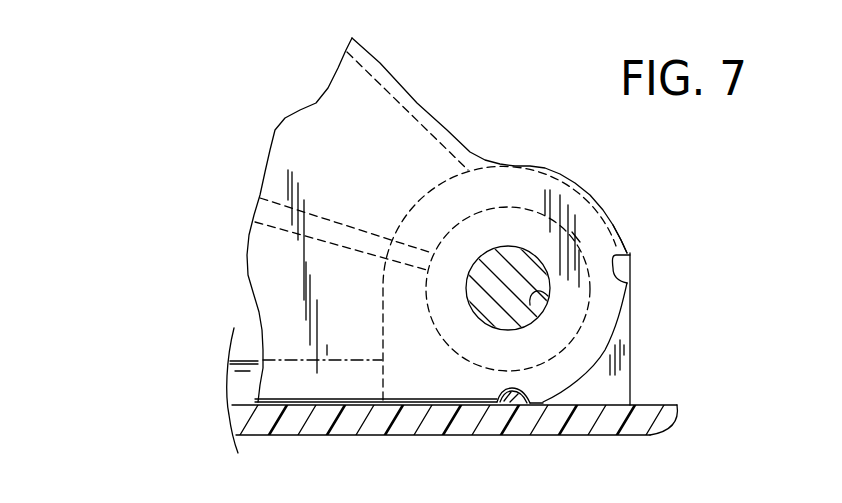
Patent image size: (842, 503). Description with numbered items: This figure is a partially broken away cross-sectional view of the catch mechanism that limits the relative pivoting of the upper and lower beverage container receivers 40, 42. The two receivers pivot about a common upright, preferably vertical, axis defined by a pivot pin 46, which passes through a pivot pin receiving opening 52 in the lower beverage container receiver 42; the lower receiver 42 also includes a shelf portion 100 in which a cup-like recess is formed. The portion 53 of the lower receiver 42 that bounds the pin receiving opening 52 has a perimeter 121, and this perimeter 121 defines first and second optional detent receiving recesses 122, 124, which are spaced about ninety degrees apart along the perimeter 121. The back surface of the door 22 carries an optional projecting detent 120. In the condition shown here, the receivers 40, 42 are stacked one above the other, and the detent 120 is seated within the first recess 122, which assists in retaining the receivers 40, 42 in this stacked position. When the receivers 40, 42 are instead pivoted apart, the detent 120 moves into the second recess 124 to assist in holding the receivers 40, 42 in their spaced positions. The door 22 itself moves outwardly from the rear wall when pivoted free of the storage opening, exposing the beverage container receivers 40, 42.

The door 22 is at (538, 437).
The upper beverage container receiver 40 is at (606, 386).
The lower beverage container receiver 42 is at (423, 97).
The pivot pin 46 is at (520, 268).
The pivot pin receiving opening 52 is at (530, 297).
The portion of receiver bounding pin receiving opening 53 is at (610, 213).
The shelf portion 100 is at (372, 123).
The projecting detent 120 is at (508, 393).
The perimeter 121 is at (622, 240).
The first detent receiving recess 122 is at (511, 394).
The second detent receiving recess 124 is at (615, 263).